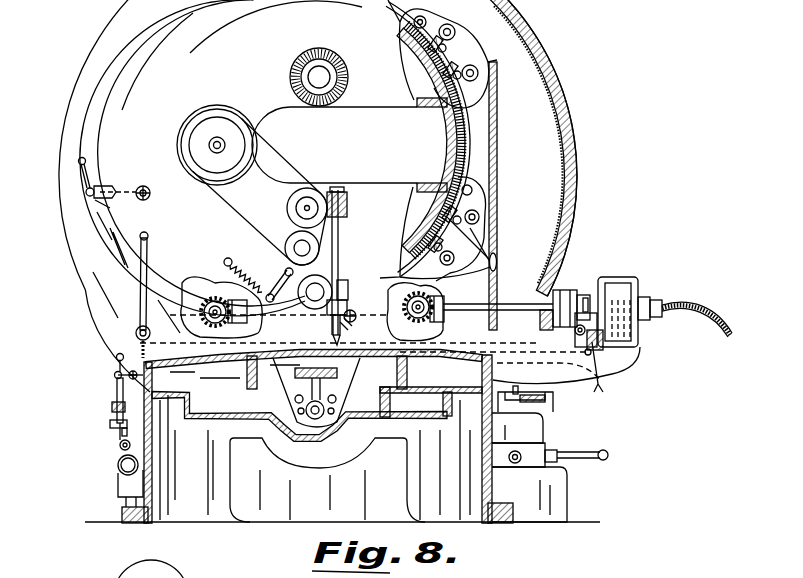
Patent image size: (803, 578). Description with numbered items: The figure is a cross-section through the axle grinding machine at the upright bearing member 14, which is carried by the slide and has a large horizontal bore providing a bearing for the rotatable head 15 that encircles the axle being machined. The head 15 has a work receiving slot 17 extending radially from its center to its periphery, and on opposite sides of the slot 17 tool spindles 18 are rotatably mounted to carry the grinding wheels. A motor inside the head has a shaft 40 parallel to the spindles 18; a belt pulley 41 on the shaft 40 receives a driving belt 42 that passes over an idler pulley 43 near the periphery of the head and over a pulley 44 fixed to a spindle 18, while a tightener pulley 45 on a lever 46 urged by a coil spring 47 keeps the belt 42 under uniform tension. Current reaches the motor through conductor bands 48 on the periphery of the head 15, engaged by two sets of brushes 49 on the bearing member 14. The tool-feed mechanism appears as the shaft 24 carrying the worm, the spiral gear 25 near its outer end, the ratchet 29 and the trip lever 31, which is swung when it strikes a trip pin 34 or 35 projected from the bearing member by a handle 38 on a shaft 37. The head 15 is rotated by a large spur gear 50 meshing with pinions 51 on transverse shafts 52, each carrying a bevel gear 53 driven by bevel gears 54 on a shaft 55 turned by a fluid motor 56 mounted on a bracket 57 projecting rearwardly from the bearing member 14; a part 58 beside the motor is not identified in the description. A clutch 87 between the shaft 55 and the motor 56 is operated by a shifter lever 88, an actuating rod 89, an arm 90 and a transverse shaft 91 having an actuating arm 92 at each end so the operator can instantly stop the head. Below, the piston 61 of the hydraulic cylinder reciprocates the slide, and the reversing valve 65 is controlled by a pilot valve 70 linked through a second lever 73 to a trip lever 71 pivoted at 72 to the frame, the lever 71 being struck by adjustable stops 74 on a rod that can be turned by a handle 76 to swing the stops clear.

The bearing member 14 is at (547, 88).
The rotatable head 15 is at (157, 139).
The work receiving slot 17 is at (385, 127).
The tool spindles 18 is at (324, 75).
The shaft 24 is at (340, 262).
The spiral gear 25 is at (328, 332).
The ratchet 29 is at (356, 316).
The trip lever 31 is at (342, 324).
The trip pin 34 is at (142, 190).
The trip pin 35 is at (142, 237).
The shaft 37 is at (110, 214).
The handle 38 is at (78, 170).
The motor shaft 40 is at (212, 138).
The belt pulley 41 is at (233, 117).
The driving belt 42 is at (250, 214).
The idler pulley 43 is at (342, 284).
The pulley 44 is at (347, 213).
The tightener pulley 45 is at (319, 248).
The lever 46 is at (277, 260).
The coil spring 47 is at (233, 256).
The conductor bands 48 is at (455, 118).
The brushes 49 is at (452, 48).
The spur gear 50 is at (193, 277).
The pinions 51 is at (187, 313).
The shafts 52 is at (200, 290).
The bevel gear 53 is at (185, 298).
The bevel gears 54 is at (183, 375).
The shaft 55 is at (508, 300).
The fluid motor 56 is at (623, 290).
The bracket 57 is at (612, 363).
The cable 58 is at (703, 312).
The piston 61 is at (342, 447).
The reversing valve 65 is at (124, 480).
The pilot valve 70 is at (118, 457).
The trip lever 71 is at (112, 398).
The pivot 72 is at (112, 415).
The second lever 73 is at (112, 436).
The stops 74 is at (117, 381).
The handle 76 is at (116, 361).
The clutch 87 is at (587, 297).
The shifter lever 88 is at (576, 331).
The actuating rod 89 is at (490, 360).
The arm 90 is at (140, 346).
The transverse shaft 91 is at (134, 329).
The actuating arm 92 is at (140, 254).